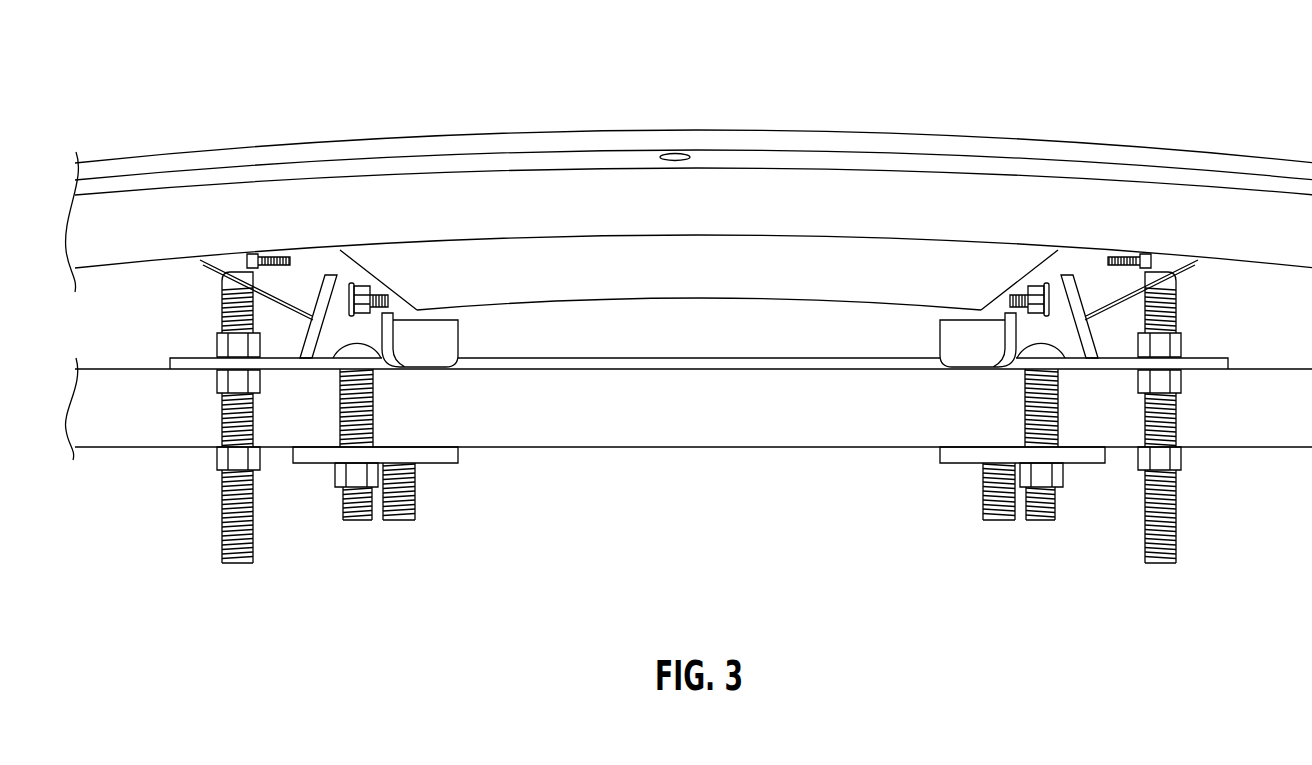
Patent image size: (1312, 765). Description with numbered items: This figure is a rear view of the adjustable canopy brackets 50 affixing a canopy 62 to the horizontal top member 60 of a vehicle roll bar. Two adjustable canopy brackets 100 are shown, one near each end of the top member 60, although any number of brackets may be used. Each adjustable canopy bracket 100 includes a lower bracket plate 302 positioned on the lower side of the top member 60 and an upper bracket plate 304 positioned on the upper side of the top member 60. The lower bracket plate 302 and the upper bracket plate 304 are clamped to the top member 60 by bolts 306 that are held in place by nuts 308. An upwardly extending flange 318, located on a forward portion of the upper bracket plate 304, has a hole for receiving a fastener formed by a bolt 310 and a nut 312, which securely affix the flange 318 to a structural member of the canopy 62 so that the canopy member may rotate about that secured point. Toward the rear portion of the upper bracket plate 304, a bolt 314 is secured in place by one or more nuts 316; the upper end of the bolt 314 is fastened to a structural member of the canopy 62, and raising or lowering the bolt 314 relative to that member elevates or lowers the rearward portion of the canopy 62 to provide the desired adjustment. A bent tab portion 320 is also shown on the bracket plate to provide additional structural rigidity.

The adjustable canopy brackets 50 is at (917, 76).
The canopy 62 is at (594, 123).
The top member 60 is at (710, 414).
The adjustable canopy brackets 100 is at (322, 572).
The lower bracket plate 302 is at (699, 471).
The upper bracket plate 304 is at (699, 376).
The bolts 306 is at (699, 452).
The nuts 308 is at (699, 486).
The bolt 310 is at (699, 287).
The nut 312 is at (699, 256).
The bolt 314 is at (699, 417).
The nuts 316 is at (699, 391).
The flange 318 is at (699, 278).
The bent tab portions 320 is at (699, 339).